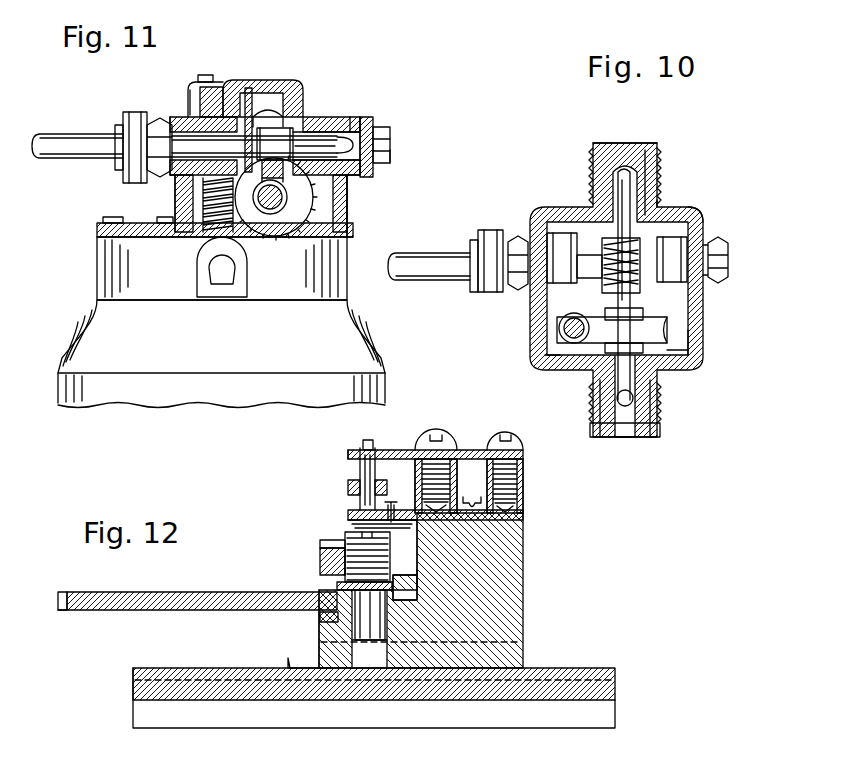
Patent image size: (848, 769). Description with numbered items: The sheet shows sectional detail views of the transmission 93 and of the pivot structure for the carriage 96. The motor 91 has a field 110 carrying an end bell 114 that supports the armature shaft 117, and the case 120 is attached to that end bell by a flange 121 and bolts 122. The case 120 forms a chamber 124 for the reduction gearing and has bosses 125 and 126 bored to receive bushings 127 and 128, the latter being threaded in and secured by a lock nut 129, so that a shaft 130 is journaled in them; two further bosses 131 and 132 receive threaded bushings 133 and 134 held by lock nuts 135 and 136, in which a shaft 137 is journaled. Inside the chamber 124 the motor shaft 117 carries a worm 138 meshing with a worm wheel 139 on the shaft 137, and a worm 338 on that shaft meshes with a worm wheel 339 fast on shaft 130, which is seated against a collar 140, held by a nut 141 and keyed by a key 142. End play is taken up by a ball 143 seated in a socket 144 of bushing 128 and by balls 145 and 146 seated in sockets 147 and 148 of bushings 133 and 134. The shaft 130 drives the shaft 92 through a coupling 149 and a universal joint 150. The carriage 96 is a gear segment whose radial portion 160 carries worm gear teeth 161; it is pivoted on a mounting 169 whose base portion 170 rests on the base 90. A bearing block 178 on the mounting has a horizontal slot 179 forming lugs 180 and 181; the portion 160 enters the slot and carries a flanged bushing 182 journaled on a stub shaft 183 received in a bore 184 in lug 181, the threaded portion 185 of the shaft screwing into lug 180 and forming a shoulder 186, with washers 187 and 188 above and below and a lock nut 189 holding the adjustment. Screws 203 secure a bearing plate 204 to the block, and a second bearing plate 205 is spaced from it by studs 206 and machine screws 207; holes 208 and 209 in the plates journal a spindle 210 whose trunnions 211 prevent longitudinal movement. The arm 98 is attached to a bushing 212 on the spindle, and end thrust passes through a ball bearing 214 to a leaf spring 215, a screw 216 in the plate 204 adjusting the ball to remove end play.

In FIG. 12, the base 90 is at (553, 712).
In FIG. 11, the motor 91 is at (197, 350).
In FIG. 11, the shaft 92 is at (58, 152).
In FIG. 10, the shaft 92 is at (437, 270).
In FIG. 11, the transmission 93 is at (228, 74).
In FIG. 10, the transmission 93 is at (690, 215).
In FIG. 12, the carriage 96 is at (143, 613).
In FIG. 12, the arm 98 is at (353, 483).
In FIG. 11, the field 110 is at (130, 392).
In FIG. 11, the end bell 114 is at (110, 345).
In FIG. 11, the armature shaft 117 is at (205, 243).
In FIG. 10, the armature shaft 117 is at (560, 350).
In FIG. 11, the case 120 is at (325, 108).
In FIG. 10, the case 120 is at (547, 223).
In FIG. 11, the flange 121 is at (97, 232).
In FIG. 11, the bolts 122 is at (157, 220).
In FIG. 11, the chamber 124 is at (338, 212).
In FIG. 10, the chamber 124 is at (680, 340).
In FIG. 11, the boss 125 is at (200, 118).
In FIG. 10, the boss 125 is at (563, 250).
In FIG. 11, the boss 126 is at (355, 115).
In FIG. 10, the boss 126 is at (677, 250).
In FIG. 11, the bushing 127 is at (197, 126).
In FIG. 11, the bushing 128 is at (390, 141).
In FIG. 10, the bushing 128 is at (730, 253).
In FIG. 11, the lock nut 129 is at (366, 125).
In FIG. 11, the shaft 130 is at (307, 140).
In FIG. 10, the shaft 130 is at (590, 260).
In FIG. 10, the boss 131 is at (658, 190).
In FIG. 10, the boss 132 is at (667, 392).
In FIG. 10, the threaded bushing 133 is at (620, 142).
In FIG. 10, the threaded bushing 134 is at (637, 438).
In FIG. 10, the lock nut 135 is at (650, 150).
In FIG. 10, the lock nut 136 is at (657, 430).
In FIG. 11, the shaft 137 is at (284, 230).
In FIG. 10, the shaft 137 is at (618, 212).
In FIG. 11, the worm 138 is at (262, 214).
In FIG. 10, the worm 138 is at (560, 328).
In FIG. 11, the worm wheel 139 is at (300, 215).
In FIG. 10, the worm wheel 139 is at (680, 367).
In FIG. 11, the collar 140 is at (305, 112).
In FIG. 10, the collar 140 is at (545, 322).
In FIG. 11, the nut 141 is at (249, 95).
In FIG. 11, the key 142 is at (288, 100).
In FIG. 11, the ball 143 is at (375, 138).
In FIG. 11, the socket 144 is at (390, 156).
In FIG. 10, the ball 145 is at (643, 167).
In FIG. 10, the ball 146 is at (650, 405).
In FIG. 10, the socket 147 is at (628, 178).
In FIG. 10, the socket 148 is at (628, 405).
In FIG. 11, the coupling 149 is at (185, 172).
In FIG. 11, the universal joint 150 is at (130, 147).
In FIG. 10, the universal joint 150 is at (482, 240).
In FIG. 12, the radial portion 160 is at (90, 592).
In FIG. 12, the worm gear teeth 161 is at (70, 610).
In FIG. 12, the mounting 169 is at (527, 645).
In FIG. 12, the base portion 170 is at (500, 660).
In FIG. 12, the bearing block 178 is at (527, 617).
In FIG. 12, the horizontal slot 179 is at (417, 598).
In FIG. 12, the lug 180 is at (317, 550).
In FIG. 12, the lug 181 is at (367, 625).
In FIG. 12, the flanged bushing 182 is at (417, 610).
In FIG. 12, the stub shaft 183 is at (320, 650).
In FIG. 12, the bore 184 is at (370, 655).
In FIG. 12, the threaded portion 185 is at (345, 546).
In FIG. 12, the shoulder 186 is at (347, 557).
In FIG. 12, the washer 187 is at (333, 587).
In FIG. 12, the washer 188 is at (325, 623).
In FIG. 12, the lock nut 189 is at (337, 540).
In FIG. 12, the screws 203 is at (465, 495).
In FIG. 12, the bearing plate 204 is at (413, 447).
In FIG. 12, the bearing plate 205 is at (403, 450).
In FIG. 12, the studs 206 is at (453, 450).
In FIG. 12, the machine screws 207 is at (510, 440).
In FIG. 12, the drilled bearing 208 is at (360, 450).
In FIG. 12, the drilled bearing 209 is at (353, 507).
In FIG. 12, the spindle 210 is at (362, 468).
In FIG. 12, the trunnions 211 is at (368, 442).
In FIG. 12, the bushing 212 is at (381, 480).
In FIG. 12, the ball bearing 214 is at (355, 525).
In FIG. 12, the leaf spring 215 is at (387, 523).
In FIG. 12, the screw 216 is at (390, 500).
In FIG. 11, the worm 338 is at (290, 200).
In FIG. 10, the worm 338 is at (643, 237).
In FIG. 11, the worm wheel 339 is at (270, 104).
In FIG. 10, the worm wheel 339 is at (643, 293).